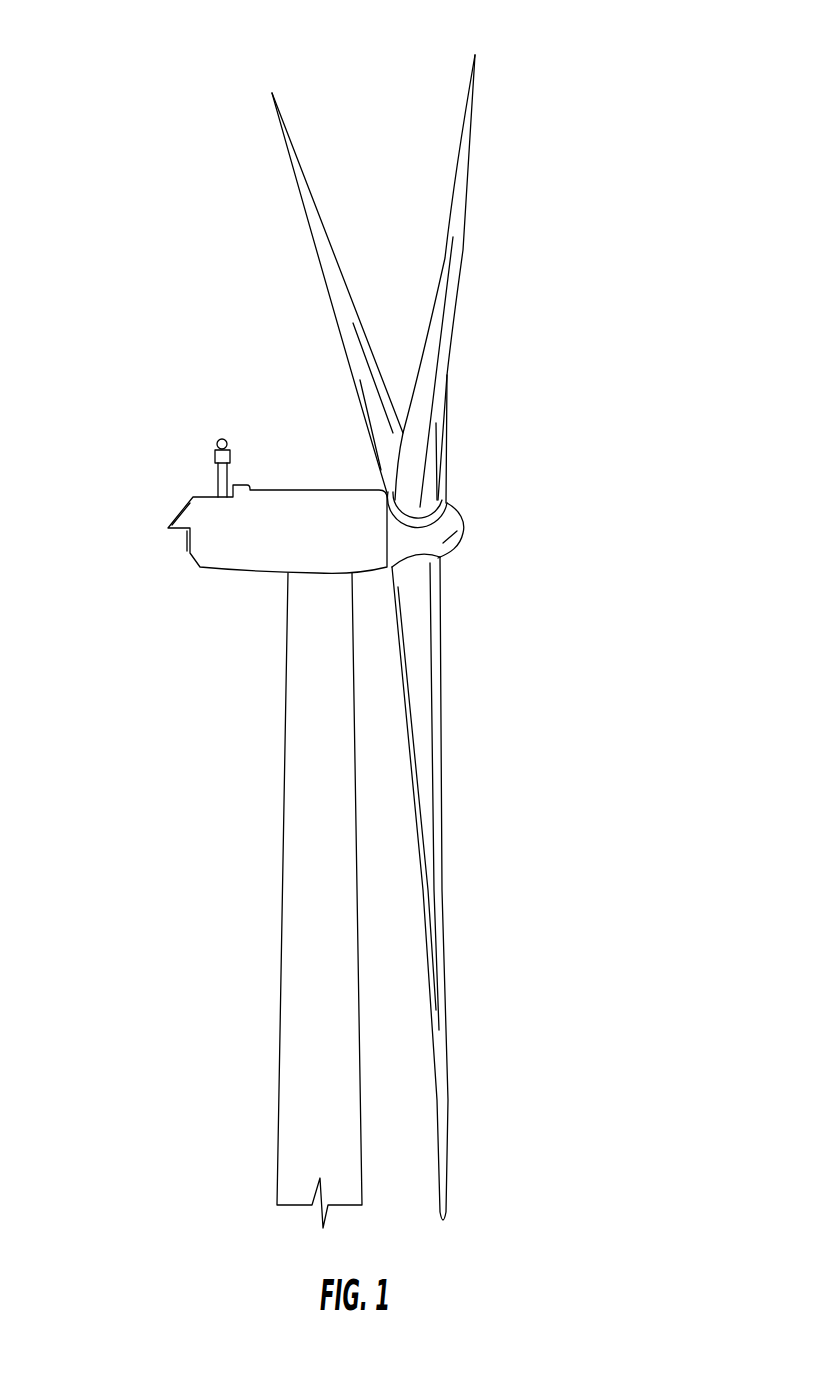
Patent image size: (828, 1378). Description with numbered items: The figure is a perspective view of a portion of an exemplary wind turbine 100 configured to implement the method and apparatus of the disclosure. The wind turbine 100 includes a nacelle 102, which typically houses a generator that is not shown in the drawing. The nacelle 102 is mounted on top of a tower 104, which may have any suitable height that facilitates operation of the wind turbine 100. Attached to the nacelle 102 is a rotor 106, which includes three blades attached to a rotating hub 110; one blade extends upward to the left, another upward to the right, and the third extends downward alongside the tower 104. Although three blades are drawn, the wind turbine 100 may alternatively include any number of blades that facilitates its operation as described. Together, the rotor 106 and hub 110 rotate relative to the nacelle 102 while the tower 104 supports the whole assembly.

The wind turbine 100 is at (182, 192).
The nacelle 102 is at (231, 572).
The tower 104 is at (283, 833).
The rotor 106 is at (570, 275).
The rotating hub 110 is at (465, 522).